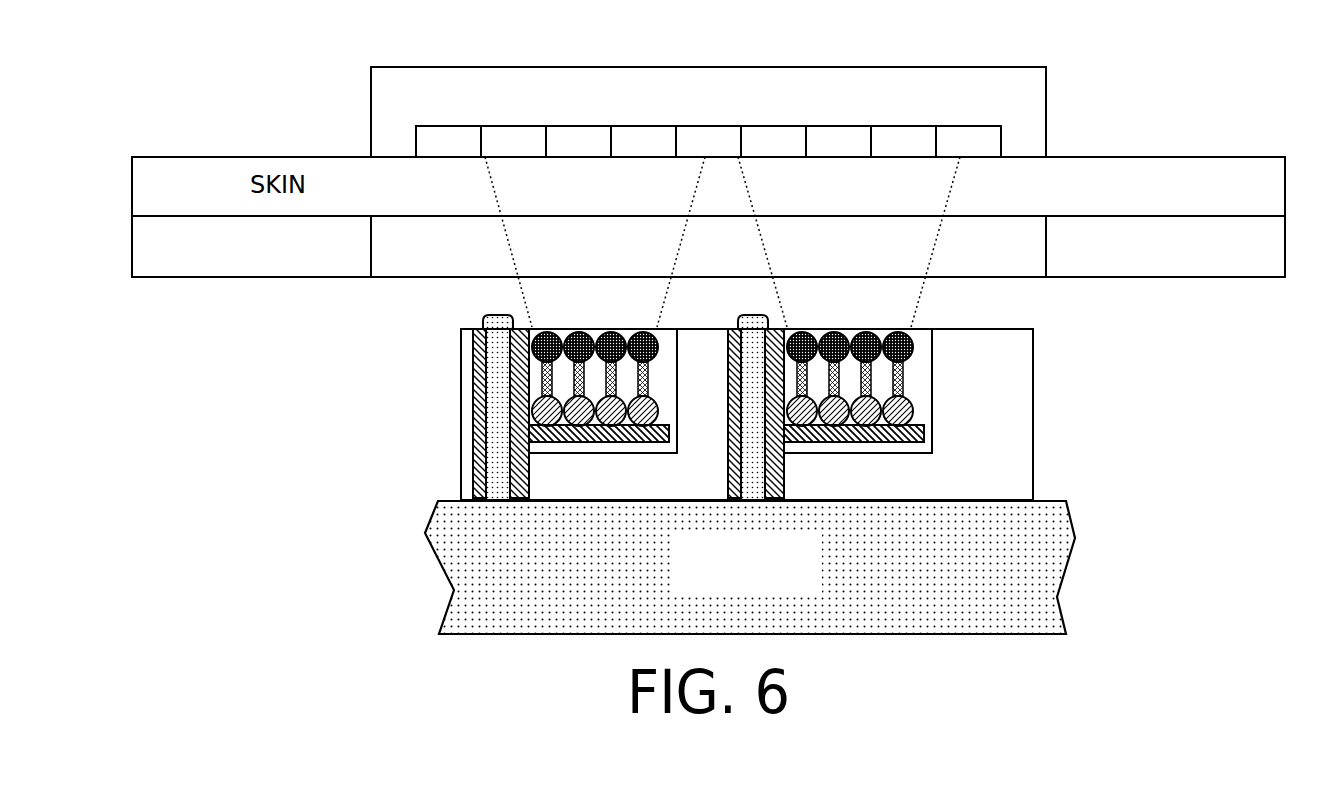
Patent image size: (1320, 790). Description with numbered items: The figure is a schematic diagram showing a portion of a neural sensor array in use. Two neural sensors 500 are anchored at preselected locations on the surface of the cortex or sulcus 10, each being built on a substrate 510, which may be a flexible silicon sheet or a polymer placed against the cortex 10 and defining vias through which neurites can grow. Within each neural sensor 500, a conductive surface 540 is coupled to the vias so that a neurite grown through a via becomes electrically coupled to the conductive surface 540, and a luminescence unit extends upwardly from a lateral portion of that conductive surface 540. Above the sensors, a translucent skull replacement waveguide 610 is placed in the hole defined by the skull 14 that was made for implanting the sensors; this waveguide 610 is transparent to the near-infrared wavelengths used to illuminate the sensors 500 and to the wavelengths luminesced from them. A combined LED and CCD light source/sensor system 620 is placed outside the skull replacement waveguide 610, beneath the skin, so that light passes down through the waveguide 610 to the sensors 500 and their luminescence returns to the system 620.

The combined LED and CCD light source/sensor system 620 is at (665, 67).
The skull 14 is at (172, 278).
The skull replacement waveguide 610 is at (430, 278).
The neural sensor 500 is at (670, 330).
The substrate 510 is at (1010, 330).
The conductive surface 540 is at (537, 436).
The cortex 10 is at (432, 536).